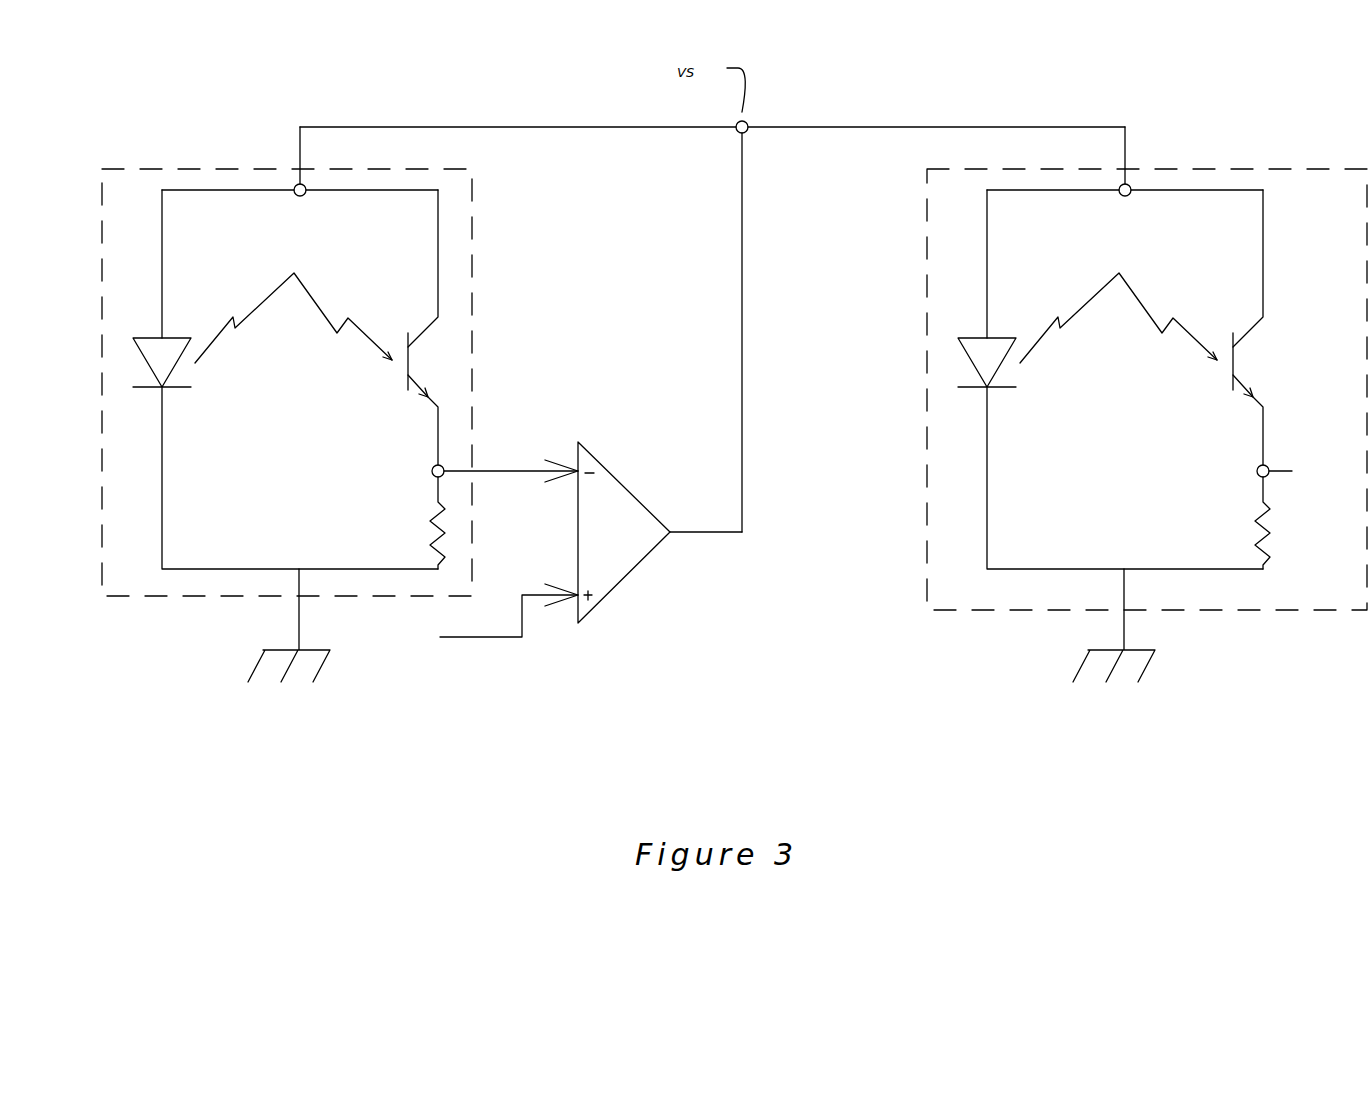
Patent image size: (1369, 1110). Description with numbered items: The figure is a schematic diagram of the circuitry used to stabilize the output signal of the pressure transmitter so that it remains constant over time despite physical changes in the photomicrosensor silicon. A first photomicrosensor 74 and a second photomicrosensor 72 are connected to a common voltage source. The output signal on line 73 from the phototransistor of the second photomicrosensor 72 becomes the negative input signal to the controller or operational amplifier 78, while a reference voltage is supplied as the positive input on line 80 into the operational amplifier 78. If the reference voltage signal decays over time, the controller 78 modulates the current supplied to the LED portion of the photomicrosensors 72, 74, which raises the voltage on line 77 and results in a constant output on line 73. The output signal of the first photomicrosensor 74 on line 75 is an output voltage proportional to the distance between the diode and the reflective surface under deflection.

The second photomicrosensor 72 is at (212, 596).
The line 73 is at (500, 471).
The first photomicrosensor 74 is at (997, 610).
The line 75 is at (1292, 471).
The line 77 is at (707, 532).
The operational amplifier 78 is at (640, 549).
The line 80 is at (473, 637).